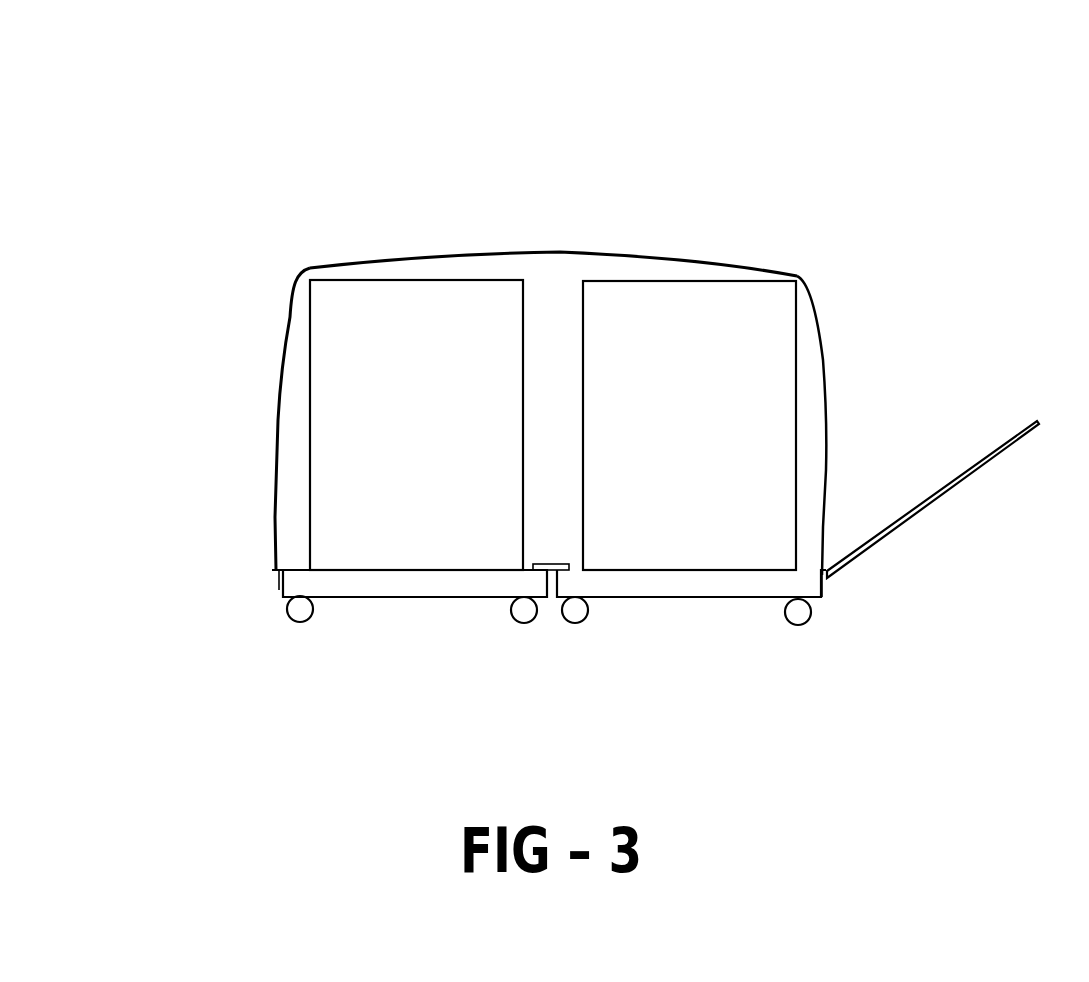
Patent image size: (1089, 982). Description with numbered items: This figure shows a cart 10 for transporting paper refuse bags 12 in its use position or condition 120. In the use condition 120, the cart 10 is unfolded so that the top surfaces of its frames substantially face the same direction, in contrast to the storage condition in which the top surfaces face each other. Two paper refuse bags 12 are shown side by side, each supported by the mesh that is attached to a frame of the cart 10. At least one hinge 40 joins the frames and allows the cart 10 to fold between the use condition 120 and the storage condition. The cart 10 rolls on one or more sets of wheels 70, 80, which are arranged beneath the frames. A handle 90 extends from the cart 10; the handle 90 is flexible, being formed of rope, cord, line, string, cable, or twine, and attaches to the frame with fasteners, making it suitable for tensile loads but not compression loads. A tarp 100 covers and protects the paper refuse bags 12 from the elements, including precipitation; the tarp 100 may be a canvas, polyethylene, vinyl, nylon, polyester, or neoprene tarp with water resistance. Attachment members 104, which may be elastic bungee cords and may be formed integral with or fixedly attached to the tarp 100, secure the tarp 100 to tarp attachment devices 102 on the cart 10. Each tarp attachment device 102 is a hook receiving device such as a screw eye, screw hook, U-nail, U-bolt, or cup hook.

The cart 10 is at (586, 118).
The paper refuse bags 12 is at (553, 425).
The hinge 40 is at (548, 564).
The set of wheels 70 is at (702, 648).
The set of wheels 80 is at (420, 656).
The handle 90 is at (1005, 436).
The tarp 100 is at (669, 255).
The tarp attachment device 102 is at (273, 582).
The attachment members 104 is at (276, 542).
The use position or condition 120 is at (952, 266).